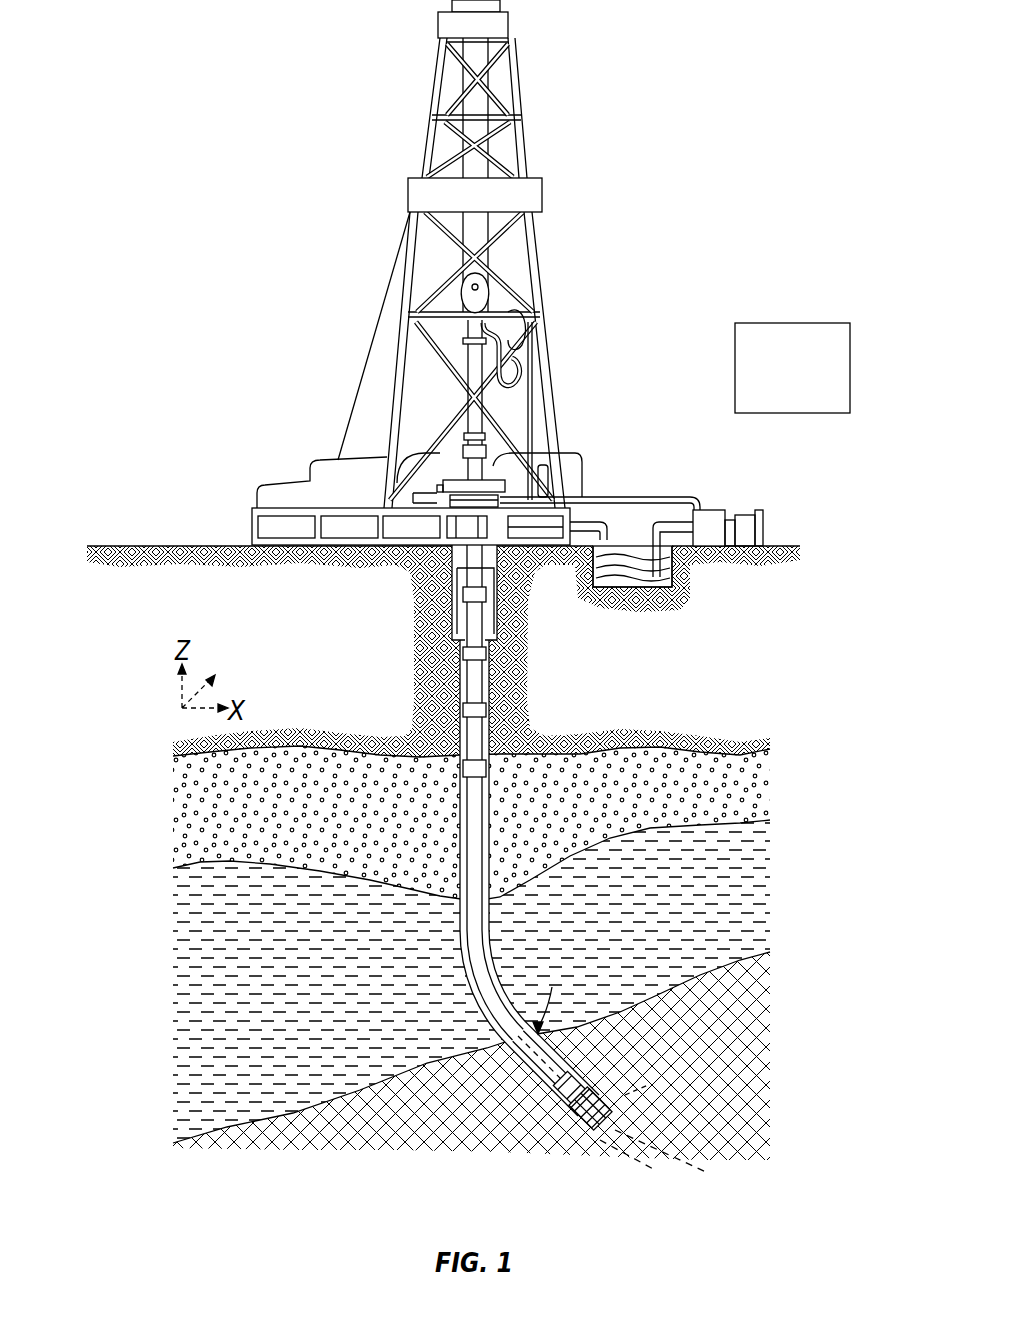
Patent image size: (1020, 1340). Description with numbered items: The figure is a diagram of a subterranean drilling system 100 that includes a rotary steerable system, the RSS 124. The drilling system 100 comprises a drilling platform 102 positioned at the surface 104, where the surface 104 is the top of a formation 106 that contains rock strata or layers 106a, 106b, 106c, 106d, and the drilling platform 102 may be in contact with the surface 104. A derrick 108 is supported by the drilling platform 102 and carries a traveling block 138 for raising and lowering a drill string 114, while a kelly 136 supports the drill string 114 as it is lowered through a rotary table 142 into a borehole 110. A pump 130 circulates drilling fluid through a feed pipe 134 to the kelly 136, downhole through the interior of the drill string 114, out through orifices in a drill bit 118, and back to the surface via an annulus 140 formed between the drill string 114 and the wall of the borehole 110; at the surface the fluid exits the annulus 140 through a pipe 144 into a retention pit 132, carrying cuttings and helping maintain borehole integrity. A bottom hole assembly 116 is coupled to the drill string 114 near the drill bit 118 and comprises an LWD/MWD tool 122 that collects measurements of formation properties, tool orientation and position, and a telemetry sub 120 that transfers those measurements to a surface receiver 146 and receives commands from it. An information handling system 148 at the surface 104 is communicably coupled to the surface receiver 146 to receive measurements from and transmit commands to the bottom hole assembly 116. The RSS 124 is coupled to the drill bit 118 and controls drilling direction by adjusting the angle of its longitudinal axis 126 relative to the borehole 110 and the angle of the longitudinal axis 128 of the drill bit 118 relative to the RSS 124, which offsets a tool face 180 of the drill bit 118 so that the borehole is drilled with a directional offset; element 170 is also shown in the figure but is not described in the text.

The drilling system 100 is at (182, 38).
The drilling platform 102 is at (252, 528).
The surface 104 is at (105, 546).
The formation 106 is at (443, 853).
The rock stratum 106a is at (316, 666).
The rock stratum 106b is at (316, 822).
The rock stratum 106c is at (316, 996).
The rock stratum 106d is at (430, 1129).
The derrick 108 is at (523, 142).
The borehole 110 is at (500, 717).
The drill string 114 is at (483, 675).
The bottom hole assembly 116 is at (556, 995).
The drill bit 118 is at (597, 1122).
The telemetry sub 120 is at (500, 1063).
The LWD/MWD tool 122 is at (557, 1063).
The rotary steerable system 124 is at (543, 1093).
The longitudinal axis of the RSS 126 is at (632, 1158).
The longitudinal axis of the drill bit 128 is at (685, 1160).
The pump 130 is at (705, 512).
The retention pit 132 is at (632, 582).
The feed pipe 134 is at (618, 497).
The kelly 136 is at (483, 367).
The traveling block 138 is at (485, 287).
The annulus 140 is at (493, 950).
The rotary table 142 is at (490, 480).
The pipe 144 is at (580, 535).
The surface receiver 146 is at (485, 435).
The information handling system 148 is at (815, 383).
The steering tool 170 is at (573, 1120).
The tool face 180 is at (633, 1088).